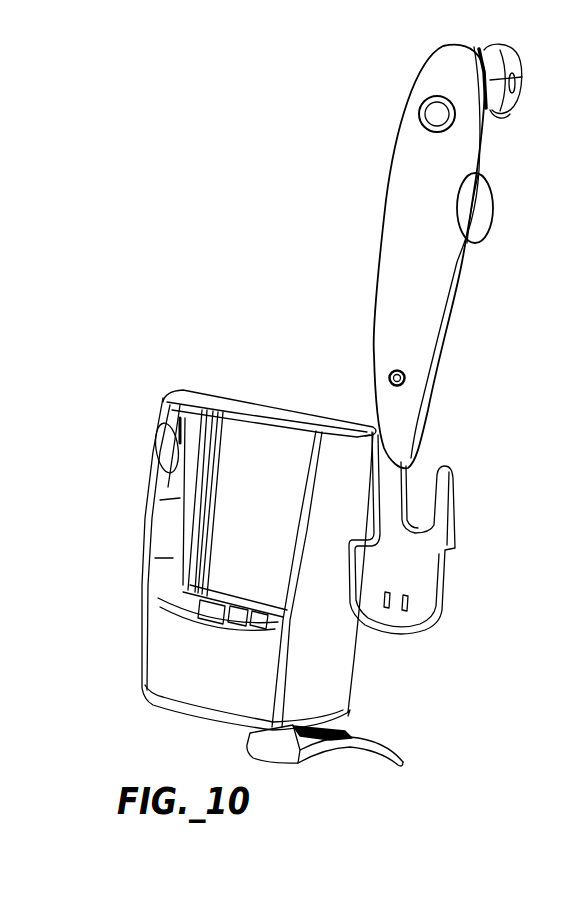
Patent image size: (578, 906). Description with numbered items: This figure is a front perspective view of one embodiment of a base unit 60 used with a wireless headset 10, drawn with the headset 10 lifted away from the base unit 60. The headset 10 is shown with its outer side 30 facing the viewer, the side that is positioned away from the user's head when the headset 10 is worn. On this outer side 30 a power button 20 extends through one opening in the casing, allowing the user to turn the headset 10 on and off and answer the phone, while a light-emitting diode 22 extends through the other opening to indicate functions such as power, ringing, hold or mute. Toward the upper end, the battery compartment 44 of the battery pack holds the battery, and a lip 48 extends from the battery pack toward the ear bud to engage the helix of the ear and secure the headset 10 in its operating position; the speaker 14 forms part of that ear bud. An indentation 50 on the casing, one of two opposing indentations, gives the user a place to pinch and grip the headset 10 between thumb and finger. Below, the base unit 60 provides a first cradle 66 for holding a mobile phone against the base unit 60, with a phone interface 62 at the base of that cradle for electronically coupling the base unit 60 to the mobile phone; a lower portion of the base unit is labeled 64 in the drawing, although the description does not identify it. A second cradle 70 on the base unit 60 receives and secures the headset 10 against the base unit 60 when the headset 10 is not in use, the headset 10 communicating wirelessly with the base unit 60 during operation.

The headset 10 is at (473, 296).
The speaker 14 is at (484, 220).
The power button 20 is at (430, 116).
The light-emitting diode 22 is at (406, 377).
The outer side 30 is at (413, 338).
The battery compartment 44 is at (495, 57).
The lip 48 is at (497, 118).
The indentation 50 is at (480, 178).
The base unit 60 is at (203, 384).
The phone interface 62 is at (205, 602).
The base bottom 64 is at (175, 690).
The first cradle 66 is at (254, 502).
The second cradle 70 is at (430, 545).